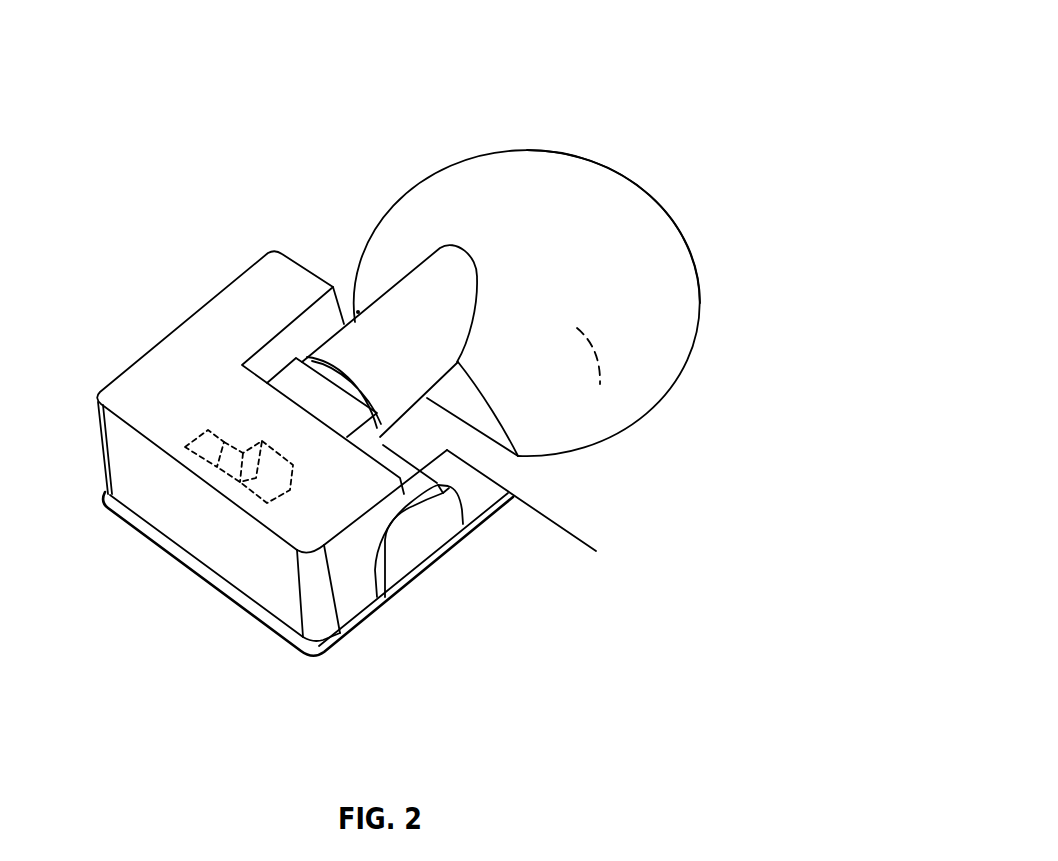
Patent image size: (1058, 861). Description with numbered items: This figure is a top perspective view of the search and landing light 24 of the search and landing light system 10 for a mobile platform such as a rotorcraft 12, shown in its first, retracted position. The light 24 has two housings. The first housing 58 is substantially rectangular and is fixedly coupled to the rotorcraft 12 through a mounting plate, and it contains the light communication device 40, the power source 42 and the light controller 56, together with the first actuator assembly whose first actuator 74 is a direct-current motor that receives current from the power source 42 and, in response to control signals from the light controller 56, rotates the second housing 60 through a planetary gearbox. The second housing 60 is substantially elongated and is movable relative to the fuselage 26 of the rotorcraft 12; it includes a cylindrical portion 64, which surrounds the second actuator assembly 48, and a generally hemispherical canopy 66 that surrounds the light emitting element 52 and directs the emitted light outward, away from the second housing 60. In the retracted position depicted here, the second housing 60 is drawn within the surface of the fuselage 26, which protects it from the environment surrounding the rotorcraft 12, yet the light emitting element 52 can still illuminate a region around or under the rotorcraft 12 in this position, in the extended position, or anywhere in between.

The search and landing light system 10 is at (647, 63).
The search and landing light 24 is at (696, 86).
The second housing 60 is at (706, 271).
The canopy 66 is at (637, 215).
The light emitting element 52 is at (596, 373).
The cylindrical portion 64 is at (422, 285).
The rotorcraft 12 is at (526, 708).
The first housing 58 is at (182, 322).
The second actuator assembly 48 is at (447, 580).
The first actuator 74 is at (382, 458).
The fuselage 26 is at (574, 532).
The power source 42 is at (226, 421).
The light controller 56 is at (259, 442).
The light communication device 40 is at (291, 466).